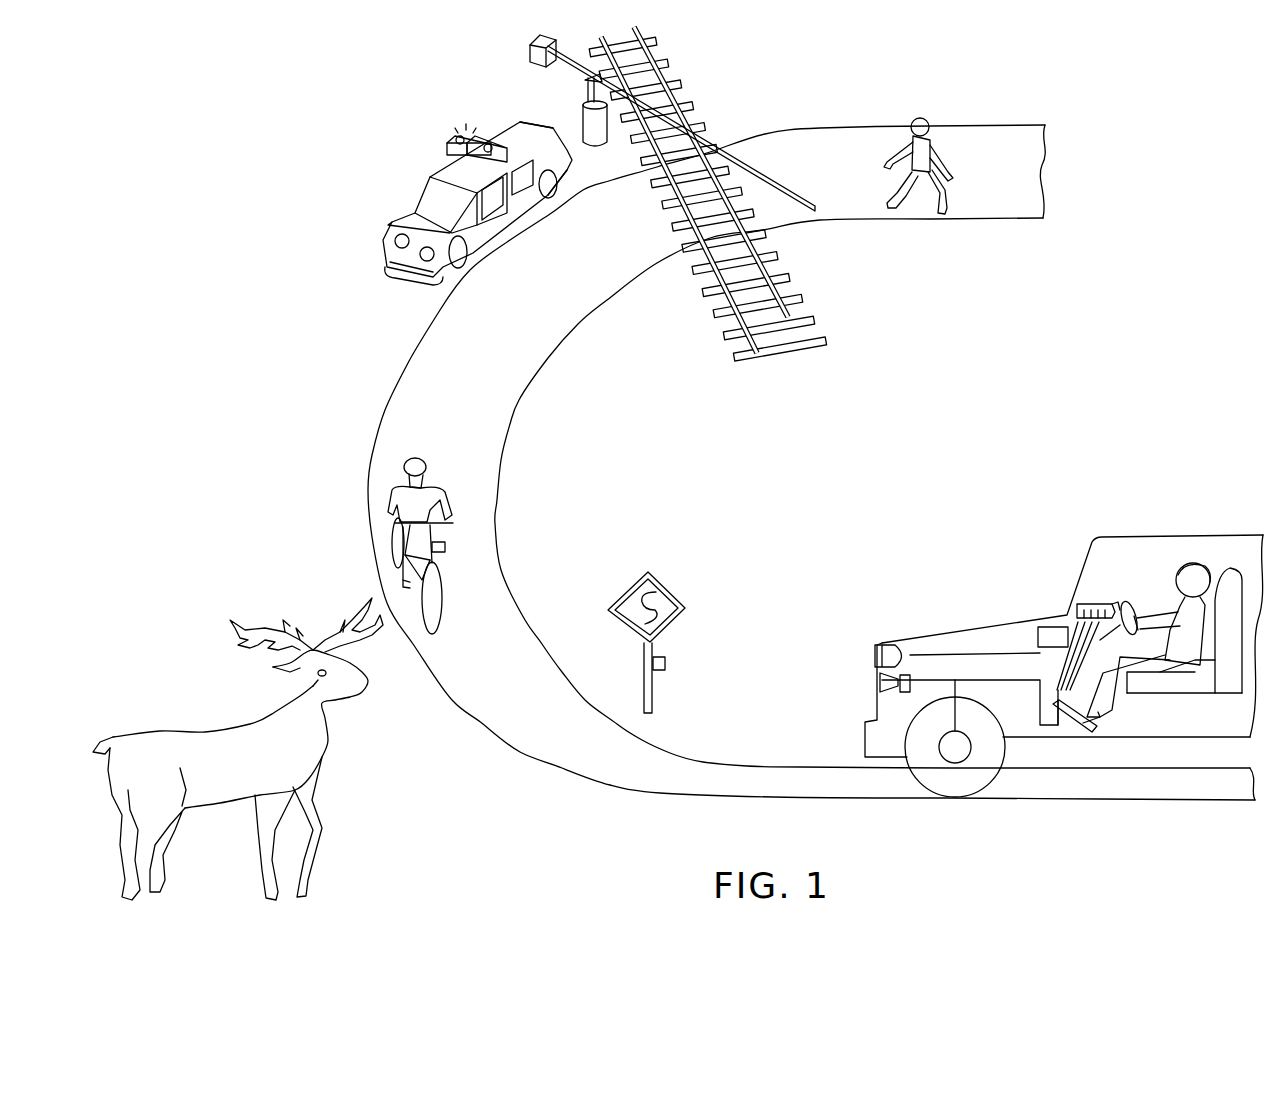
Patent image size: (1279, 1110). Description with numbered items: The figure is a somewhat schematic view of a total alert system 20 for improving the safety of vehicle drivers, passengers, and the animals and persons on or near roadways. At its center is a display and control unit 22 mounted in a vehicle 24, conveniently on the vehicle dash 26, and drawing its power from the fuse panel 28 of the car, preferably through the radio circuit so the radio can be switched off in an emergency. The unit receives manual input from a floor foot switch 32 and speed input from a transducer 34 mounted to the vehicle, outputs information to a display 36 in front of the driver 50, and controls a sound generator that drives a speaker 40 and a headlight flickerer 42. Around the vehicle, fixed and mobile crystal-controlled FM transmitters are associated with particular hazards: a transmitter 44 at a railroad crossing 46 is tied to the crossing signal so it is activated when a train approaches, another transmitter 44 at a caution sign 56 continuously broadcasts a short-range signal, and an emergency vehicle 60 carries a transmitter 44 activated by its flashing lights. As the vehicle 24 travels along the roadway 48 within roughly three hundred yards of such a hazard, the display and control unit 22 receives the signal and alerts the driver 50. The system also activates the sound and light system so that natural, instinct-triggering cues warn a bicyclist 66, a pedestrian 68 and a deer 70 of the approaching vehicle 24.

The total alert system 20 is at (920, 393).
The display and control unit 22 is at (1095, 602).
The vehicle 24 is at (1125, 537).
The vehicle dash 26 is at (1078, 615).
The fuse panel 28 is at (1038, 640).
The floor foot switch 32 is at (1078, 728).
The transducer 34 is at (960, 747).
The display 36 is at (1120, 606).
The speaker 40 is at (880, 683).
The headlight flickerer 42 is at (876, 650).
The transmitter 44 is at (582, 110).
The railroad crossing 46 is at (678, 103).
The roadway 48 is at (652, 742).
The driver 50 is at (1210, 565).
The caution sign 56 is at (662, 580).
The emergency vehicle 60 is at (408, 194).
The bicyclist 66 is at (413, 457).
The pedestrian 68 is at (918, 118).
The deer 70 is at (205, 732).